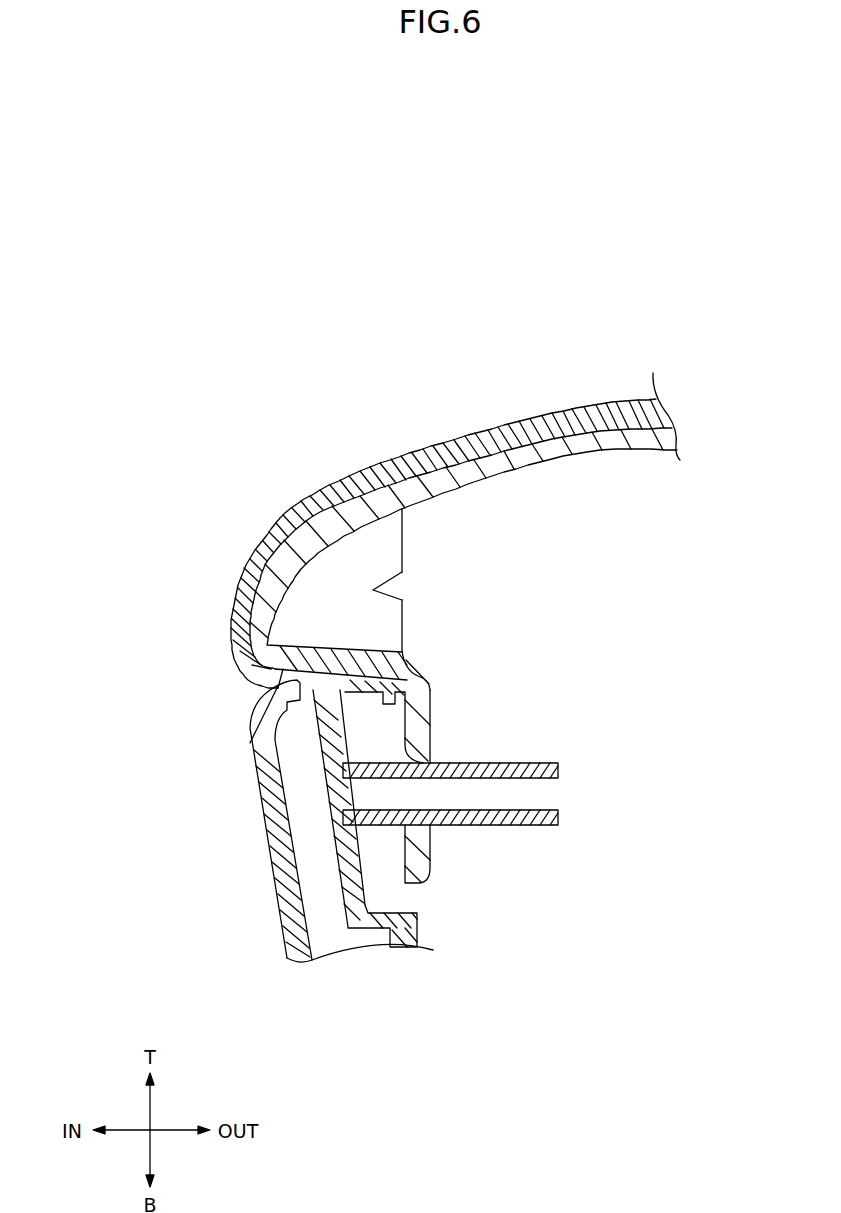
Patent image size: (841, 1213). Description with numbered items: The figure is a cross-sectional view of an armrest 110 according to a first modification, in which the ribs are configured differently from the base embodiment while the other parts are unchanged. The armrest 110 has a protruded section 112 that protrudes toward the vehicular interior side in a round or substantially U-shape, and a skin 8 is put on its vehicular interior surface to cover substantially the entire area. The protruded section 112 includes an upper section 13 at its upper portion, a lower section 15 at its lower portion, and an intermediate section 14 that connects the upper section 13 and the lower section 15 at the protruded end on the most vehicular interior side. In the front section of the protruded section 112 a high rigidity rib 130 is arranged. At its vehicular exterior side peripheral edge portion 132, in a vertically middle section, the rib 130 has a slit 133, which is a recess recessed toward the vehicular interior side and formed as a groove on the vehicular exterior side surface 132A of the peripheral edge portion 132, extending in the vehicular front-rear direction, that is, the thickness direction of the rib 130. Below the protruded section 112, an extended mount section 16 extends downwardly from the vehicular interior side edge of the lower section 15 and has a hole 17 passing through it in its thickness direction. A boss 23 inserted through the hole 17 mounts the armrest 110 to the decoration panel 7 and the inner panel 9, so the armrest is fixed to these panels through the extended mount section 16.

The armrest 110 is at (447, 188).
The protruded section 112 is at (284, 372).
The skin 8 is at (546, 412).
The upper section 13 is at (457, 470).
The high rigidity rib 130 is at (333, 578).
The intermediate section 14 is at (253, 609).
The peripheral edge portion 132 is at (385, 550).
The vehicular exterior side surface 132A is at (403, 557).
The slit 133 is at (388, 597).
The extended mount section 16 is at (415, 729).
The lower section 15 is at (357, 667).
The hole 17 is at (422, 778).
The boss 23 is at (536, 826).
The inner panel 9 is at (418, 920).
The decoration panel 7 is at (293, 933).